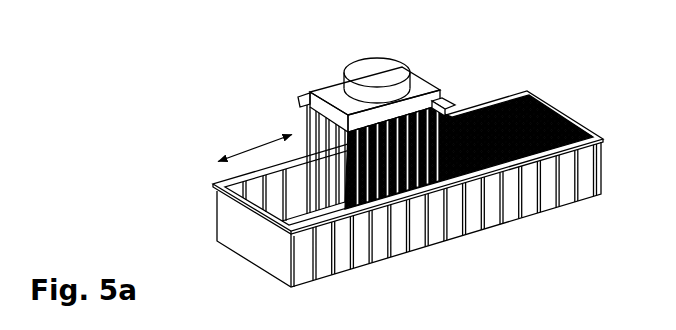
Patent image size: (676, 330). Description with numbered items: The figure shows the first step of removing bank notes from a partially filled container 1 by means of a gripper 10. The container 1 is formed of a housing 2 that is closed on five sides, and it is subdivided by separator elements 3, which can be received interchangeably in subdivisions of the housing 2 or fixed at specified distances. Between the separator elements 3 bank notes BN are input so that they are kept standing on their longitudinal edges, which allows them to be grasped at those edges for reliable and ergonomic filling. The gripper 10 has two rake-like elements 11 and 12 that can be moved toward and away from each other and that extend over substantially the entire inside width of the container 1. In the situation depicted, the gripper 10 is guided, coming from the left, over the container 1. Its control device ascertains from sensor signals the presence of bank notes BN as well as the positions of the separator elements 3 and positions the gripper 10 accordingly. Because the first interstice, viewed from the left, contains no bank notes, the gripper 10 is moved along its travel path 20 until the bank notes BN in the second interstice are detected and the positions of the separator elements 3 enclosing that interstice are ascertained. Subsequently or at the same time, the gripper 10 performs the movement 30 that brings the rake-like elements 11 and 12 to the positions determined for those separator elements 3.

The container 1 is at (187, 237).
The housing 2 is at (218, 207).
The separator elements 3 is at (362, 262).
The gripper 10 is at (296, 65).
The rake-like element 11 is at (450, 106).
The rake-like element 12 is at (299, 100).
The travel path 20 is at (255, 142).
The movement of the rake-like elements 30 is at (385, 44).
The bank notes BN is at (528, 89).